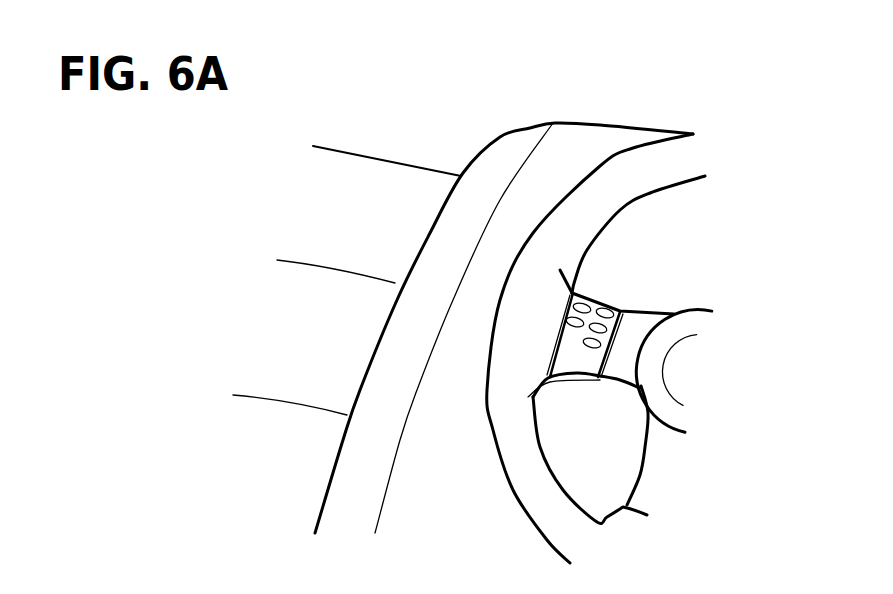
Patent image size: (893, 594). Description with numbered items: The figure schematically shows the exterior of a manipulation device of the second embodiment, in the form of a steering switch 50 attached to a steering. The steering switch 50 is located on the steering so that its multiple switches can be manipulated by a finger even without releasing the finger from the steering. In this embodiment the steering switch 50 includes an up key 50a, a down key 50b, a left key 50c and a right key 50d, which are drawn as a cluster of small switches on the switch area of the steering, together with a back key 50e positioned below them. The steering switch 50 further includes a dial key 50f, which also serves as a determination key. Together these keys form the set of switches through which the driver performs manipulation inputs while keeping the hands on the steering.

The steering switch 50 is at (571, 307).
The up key 50a is at (612, 330).
The down key 50b is at (568, 323).
The left key 50c is at (591, 304).
The right key 50d is at (608, 309).
The back key 50e is at (590, 350).
The dial key 50f is at (563, 351).